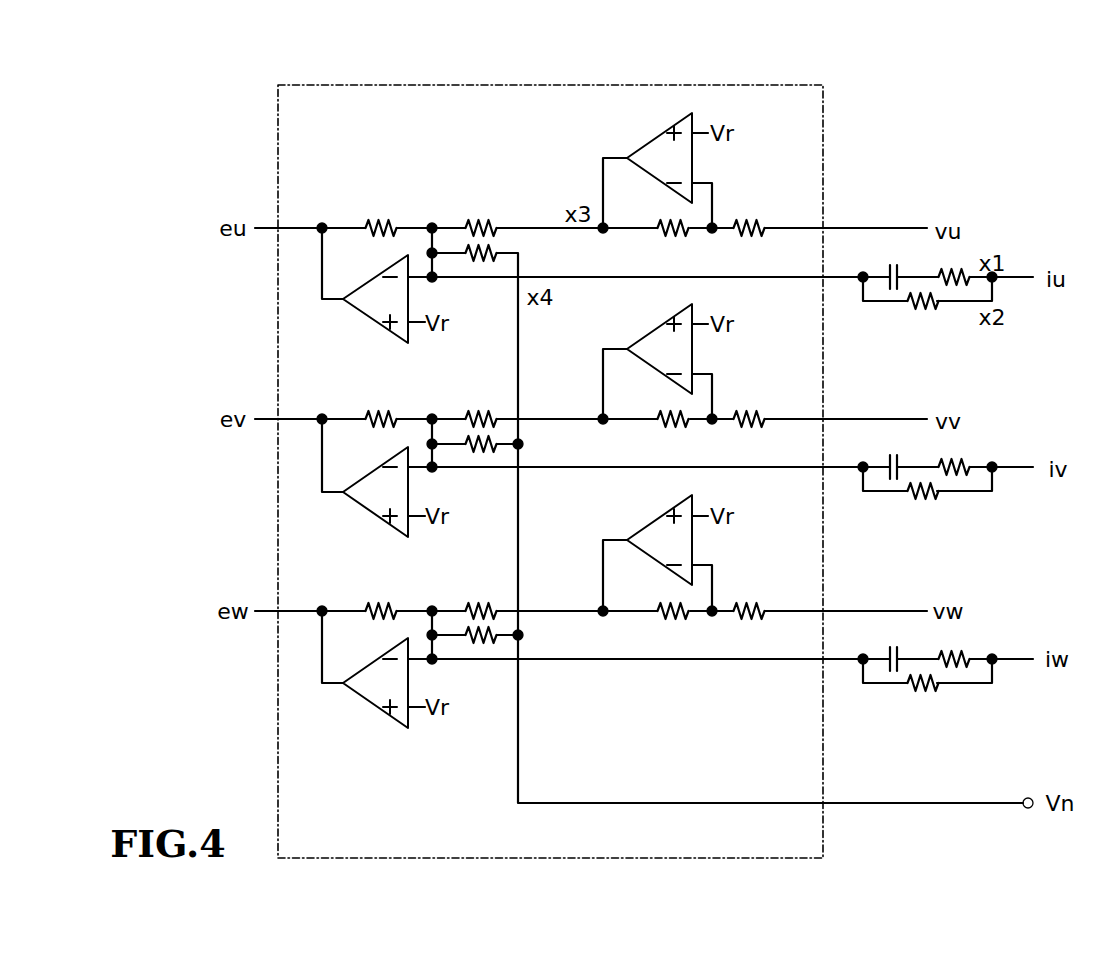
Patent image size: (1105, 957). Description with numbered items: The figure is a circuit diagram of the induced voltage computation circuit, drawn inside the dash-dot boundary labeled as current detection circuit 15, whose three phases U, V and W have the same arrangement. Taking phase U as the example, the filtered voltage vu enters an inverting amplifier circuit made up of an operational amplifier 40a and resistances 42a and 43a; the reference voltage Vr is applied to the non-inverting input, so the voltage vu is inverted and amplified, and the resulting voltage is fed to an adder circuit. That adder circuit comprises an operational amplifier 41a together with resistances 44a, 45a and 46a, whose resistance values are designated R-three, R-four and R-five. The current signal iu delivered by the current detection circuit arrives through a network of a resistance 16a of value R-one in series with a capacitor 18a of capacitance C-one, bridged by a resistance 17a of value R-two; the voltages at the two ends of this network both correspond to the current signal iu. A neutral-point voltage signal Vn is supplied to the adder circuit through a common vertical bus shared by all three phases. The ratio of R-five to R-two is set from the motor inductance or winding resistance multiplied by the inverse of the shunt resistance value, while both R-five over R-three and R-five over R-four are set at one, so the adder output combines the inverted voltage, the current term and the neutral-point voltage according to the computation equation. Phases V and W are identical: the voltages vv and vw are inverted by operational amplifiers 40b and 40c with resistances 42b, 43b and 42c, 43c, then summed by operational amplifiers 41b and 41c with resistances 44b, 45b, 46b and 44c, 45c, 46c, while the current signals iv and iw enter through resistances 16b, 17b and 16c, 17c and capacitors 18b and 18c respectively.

The current detection circuit 15 is at (577, 84).
The resistance 16a is at (958, 267).
The resistance 16b is at (965, 460).
The resistance 16c is at (962, 650).
The resistance 17a is at (920, 310).
The resistance 17b is at (924, 501).
The resistance 17c is at (924, 694).
The capacitor 18a is at (887, 270).
The capacitor 18b is at (889, 462).
The capacitor 18c is at (886, 652).
The operational amplifier 40a is at (649, 142).
The operational amplifier 40b is at (649, 333).
The operational amplifier 40c is at (646, 525).
The operational amplifier 41a is at (379, 275).
The operational amplifier 41b is at (379, 470).
The operational amplifier 41c is at (379, 660).
The resistance 42a is at (754, 221).
The resistance 42b is at (754, 412).
The resistance 42c is at (754, 603).
The resistance 43a is at (672, 236).
The resistance 43b is at (672, 425).
The resistance 43c is at (667, 617).
The resistance 44a is at (482, 218).
The resistance 44b is at (482, 409).
The resistance 44c is at (482, 601).
The resistance 45a is at (497, 246).
The resistance 45b is at (483, 452).
The resistance 45c is at (483, 648).
The resistance 46a is at (379, 218).
The resistance 46b is at (379, 409).
The resistance 46c is at (379, 601).